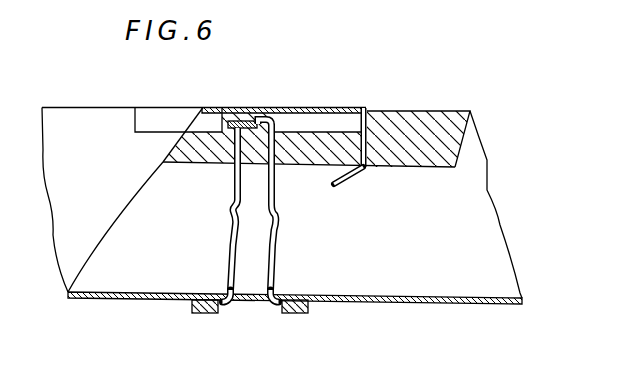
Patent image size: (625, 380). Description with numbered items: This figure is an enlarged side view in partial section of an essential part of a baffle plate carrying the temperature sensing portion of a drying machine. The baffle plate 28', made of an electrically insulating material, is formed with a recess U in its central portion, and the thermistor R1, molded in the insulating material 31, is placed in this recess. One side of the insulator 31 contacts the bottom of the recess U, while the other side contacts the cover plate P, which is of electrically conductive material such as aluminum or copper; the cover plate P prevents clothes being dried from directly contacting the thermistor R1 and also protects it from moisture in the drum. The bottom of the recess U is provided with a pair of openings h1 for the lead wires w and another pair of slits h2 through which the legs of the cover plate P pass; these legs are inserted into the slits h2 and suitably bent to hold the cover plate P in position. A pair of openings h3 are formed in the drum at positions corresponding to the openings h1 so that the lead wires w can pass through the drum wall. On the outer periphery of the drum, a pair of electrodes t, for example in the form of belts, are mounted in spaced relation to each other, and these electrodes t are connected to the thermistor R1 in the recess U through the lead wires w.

The recess U is at (203, 121).
The thermistor R1 is at (238, 116).
The cover plate P is at (357, 108).
The baffle plate 28' is at (419, 116).
The insulating material 31 is at (205, 163).
The openings h1 is at (301, 203).
The slits h2 is at (362, 170).
The lead wires w is at (231, 244).
The openings h3 is at (232, 306).
The electrodes t is at (197, 316).